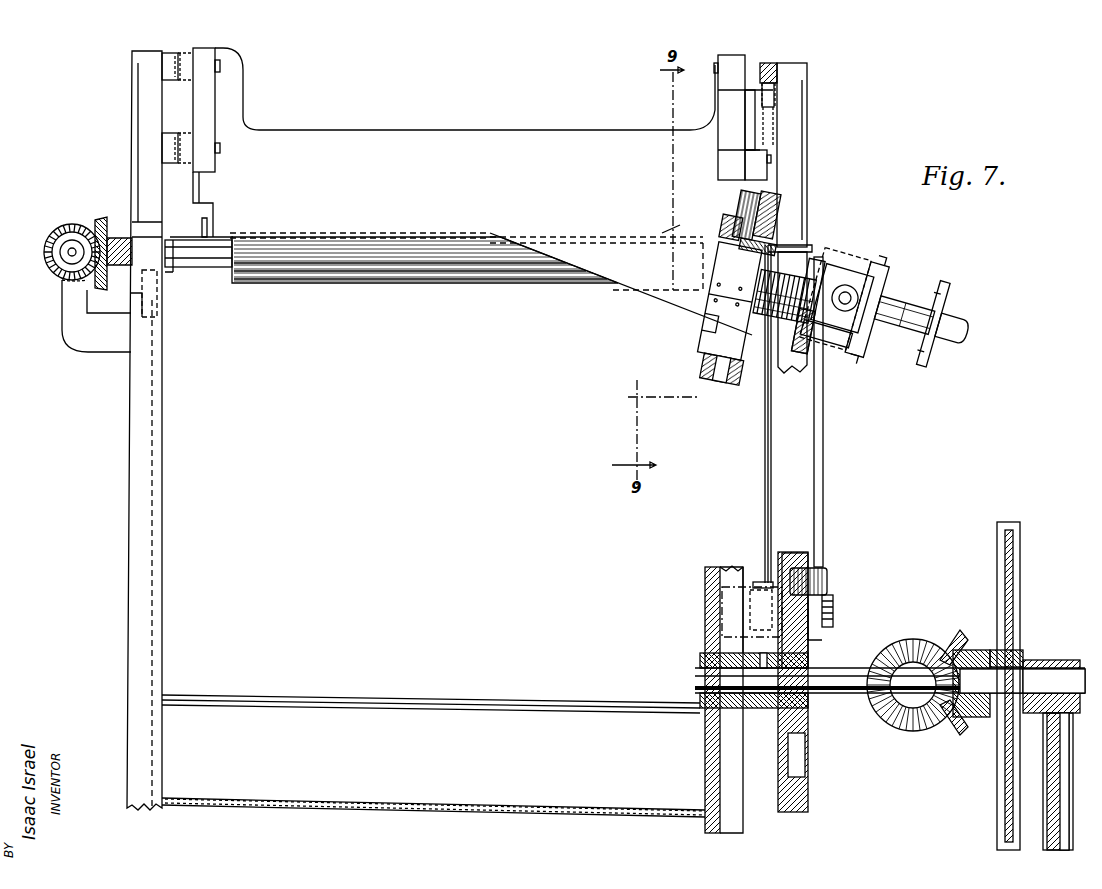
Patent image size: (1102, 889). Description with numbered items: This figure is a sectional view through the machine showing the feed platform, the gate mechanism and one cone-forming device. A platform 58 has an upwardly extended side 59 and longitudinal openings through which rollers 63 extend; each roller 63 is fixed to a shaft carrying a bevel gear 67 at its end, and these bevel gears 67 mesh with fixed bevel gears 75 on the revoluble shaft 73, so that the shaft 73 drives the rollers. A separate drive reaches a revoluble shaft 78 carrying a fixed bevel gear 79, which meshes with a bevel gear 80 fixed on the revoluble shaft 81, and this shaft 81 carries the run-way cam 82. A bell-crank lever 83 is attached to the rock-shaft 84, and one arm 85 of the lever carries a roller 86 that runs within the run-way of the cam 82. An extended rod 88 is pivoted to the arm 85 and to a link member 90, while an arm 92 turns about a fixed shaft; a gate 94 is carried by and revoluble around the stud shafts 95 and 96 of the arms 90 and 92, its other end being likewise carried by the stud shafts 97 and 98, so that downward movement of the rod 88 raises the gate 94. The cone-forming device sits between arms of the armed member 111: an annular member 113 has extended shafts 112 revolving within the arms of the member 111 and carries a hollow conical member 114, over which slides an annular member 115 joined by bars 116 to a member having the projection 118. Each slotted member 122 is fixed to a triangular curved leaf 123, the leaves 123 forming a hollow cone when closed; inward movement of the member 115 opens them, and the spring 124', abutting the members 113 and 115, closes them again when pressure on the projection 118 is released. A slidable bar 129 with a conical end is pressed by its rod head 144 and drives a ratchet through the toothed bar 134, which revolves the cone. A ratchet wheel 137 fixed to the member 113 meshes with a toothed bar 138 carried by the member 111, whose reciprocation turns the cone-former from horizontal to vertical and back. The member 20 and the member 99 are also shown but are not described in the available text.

The frame 20 is at (433, 756).
The platform 58 is at (228, 240).
The upwardly extended side 59 is at (203, 222).
The roller 63 is at (348, 280).
The bevel gear 67 is at (98, 218).
The revoluble shaft 73 is at (68, 258).
The bevel gear 75 is at (60, 230).
The revoluble shaft 78 is at (928, 700).
The bevel gear 79 is at (905, 645).
The bevel gear 80 is at (955, 636).
The revoluble shaft 81 is at (855, 697).
The run-way cam 82 is at (800, 712).
The bell-crank lever 83 is at (823, 425).
The rock-shaft 84 is at (834, 614).
The arm 85 is at (826, 582).
The roller 86 is at (808, 574).
The extended rod 88 is at (764, 450).
The link member 90 is at (167, 146).
The arm 92 is at (167, 73).
The gate 94 is at (468, 152).
The stud shaft 95 is at (718, 68).
The stud shaft 96 is at (772, 152).
The stud shaft 97 is at (221, 148).
The stud shaft 98 is at (221, 66).
The frame standard 99 is at (1010, 580).
The armed member 111 is at (737, 400).
The extended shaft 112 is at (775, 192).
The annular member 113 is at (716, 326).
The hollow conical member 114 is at (655, 318).
The annular member 115 is at (822, 262).
The bar 116 is at (893, 360).
The projection 118 is at (968, 334).
The member 122 is at (786, 325).
The triangular curved leaf 123 is at (640, 305).
The spring 124' is at (838, 271).
The slidable bar 129 is at (930, 292).
The toothed bar 134 is at (850, 296).
The ratchet wheel 137 is at (770, 236).
The toothed bar 138 is at (724, 224).
The rod head 144 is at (940, 318).